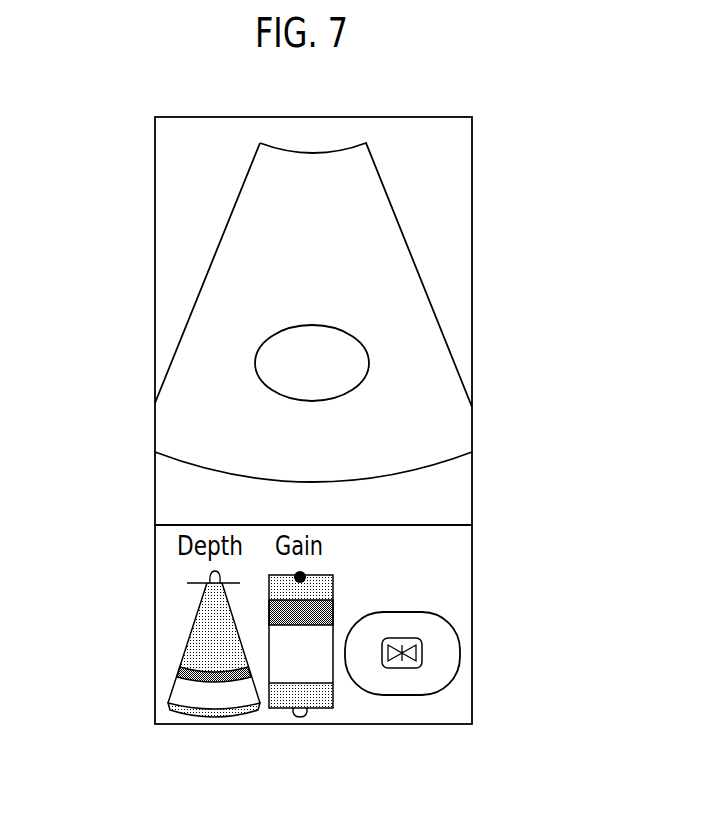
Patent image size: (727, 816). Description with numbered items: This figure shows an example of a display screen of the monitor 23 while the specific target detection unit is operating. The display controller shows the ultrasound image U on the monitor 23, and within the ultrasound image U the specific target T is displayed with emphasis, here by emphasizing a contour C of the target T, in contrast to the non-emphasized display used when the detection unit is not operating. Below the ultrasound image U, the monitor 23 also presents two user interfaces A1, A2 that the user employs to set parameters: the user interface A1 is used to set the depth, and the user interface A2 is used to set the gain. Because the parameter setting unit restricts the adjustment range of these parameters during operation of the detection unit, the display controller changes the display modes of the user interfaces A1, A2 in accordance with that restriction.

The monitor 23 is at (472, 170).
The ultrasound image U is at (366, 243).
The specific target T is at (333, 348).
The contour C is at (367, 378).
The user interface A1 is at (210, 612).
The user interface A2 is at (320, 610).